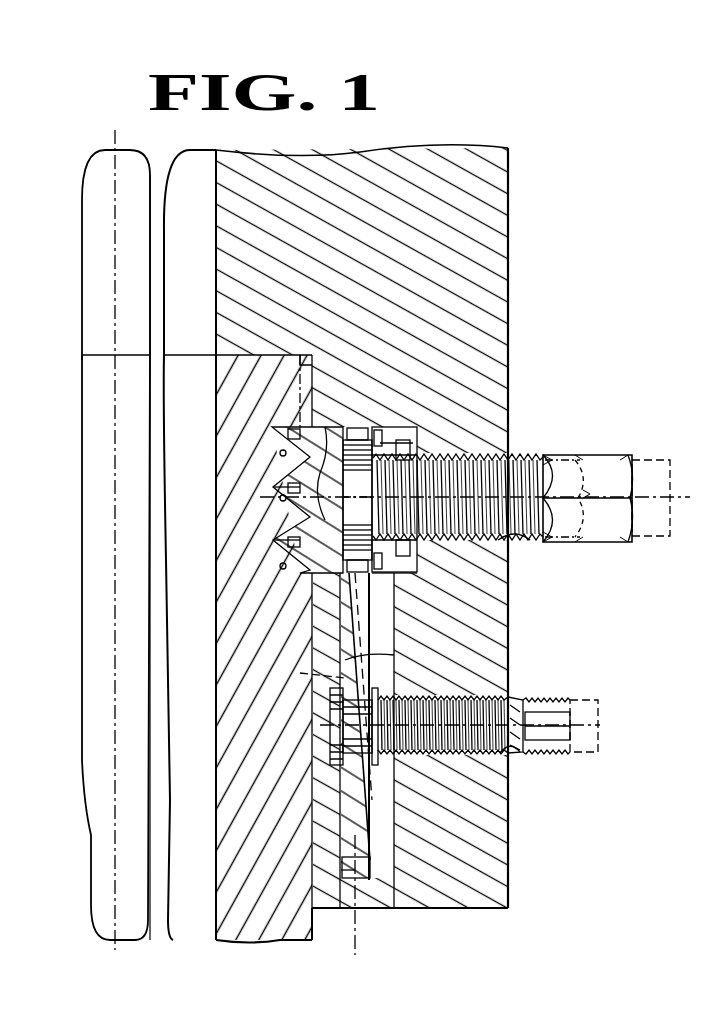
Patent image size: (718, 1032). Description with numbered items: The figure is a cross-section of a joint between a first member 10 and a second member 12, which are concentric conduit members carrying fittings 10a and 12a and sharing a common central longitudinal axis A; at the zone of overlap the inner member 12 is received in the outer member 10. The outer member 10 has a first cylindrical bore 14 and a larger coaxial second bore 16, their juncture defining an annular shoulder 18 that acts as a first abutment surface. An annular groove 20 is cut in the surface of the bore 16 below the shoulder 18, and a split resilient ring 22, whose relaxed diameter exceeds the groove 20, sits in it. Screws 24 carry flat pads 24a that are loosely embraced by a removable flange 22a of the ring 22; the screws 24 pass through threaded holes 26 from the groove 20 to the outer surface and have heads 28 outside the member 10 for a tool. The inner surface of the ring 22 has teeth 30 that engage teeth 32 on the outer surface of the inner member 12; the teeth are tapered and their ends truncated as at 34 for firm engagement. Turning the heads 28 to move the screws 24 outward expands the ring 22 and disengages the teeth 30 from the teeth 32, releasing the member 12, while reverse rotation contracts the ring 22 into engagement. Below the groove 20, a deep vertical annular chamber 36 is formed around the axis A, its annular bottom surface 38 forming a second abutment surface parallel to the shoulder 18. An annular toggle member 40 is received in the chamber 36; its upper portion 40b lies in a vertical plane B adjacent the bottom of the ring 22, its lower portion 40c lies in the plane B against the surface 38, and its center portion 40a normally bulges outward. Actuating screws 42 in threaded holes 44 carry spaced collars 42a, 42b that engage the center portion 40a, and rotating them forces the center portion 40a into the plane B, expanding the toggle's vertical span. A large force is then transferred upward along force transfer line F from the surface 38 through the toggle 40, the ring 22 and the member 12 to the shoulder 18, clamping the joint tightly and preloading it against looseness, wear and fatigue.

The common central longitudinal axis A is at (118, 150).
The first member 10 is at (510, 192).
The fitting 10a is at (376, 306).
The second member 12 is at (290, 945).
The fitting 12a is at (276, 640).
The first cylindrical opening, or bore 14 is at (216, 270).
The second cylindrical opening, or bore 16 is at (312, 362).
The shoulder 18 is at (228, 358).
The annular groove 20 is at (408, 556).
The split resilient ring 22 is at (290, 560).
The removable flange 22a is at (368, 433).
The screws 24 is at (515, 458).
The flat pads 24a is at (395, 445).
The threaded holes 26 is at (520, 540).
The heads 28 is at (616, 462).
The teeth 30 is at (300, 448).
The teeth 32 is at (292, 470).
The truncated ends of teeth 34 is at (280, 434).
The vertical annular chamber 36 is at (394, 603).
The bottom surface 38 is at (372, 873).
The annular toggle member 40 is at (383, 785).
The center portion 40a is at (388, 664).
The upper portion 40b is at (378, 582).
The lower portion 40c is at (342, 871).
The actuating screws 42 is at (520, 700).
The collar 42a is at (336, 700).
The collar 42b is at (355, 721).
The threaded holes 44 is at (508, 755).
The vertical plane B is at (358, 930).
The force transfer line F is at (316, 673).